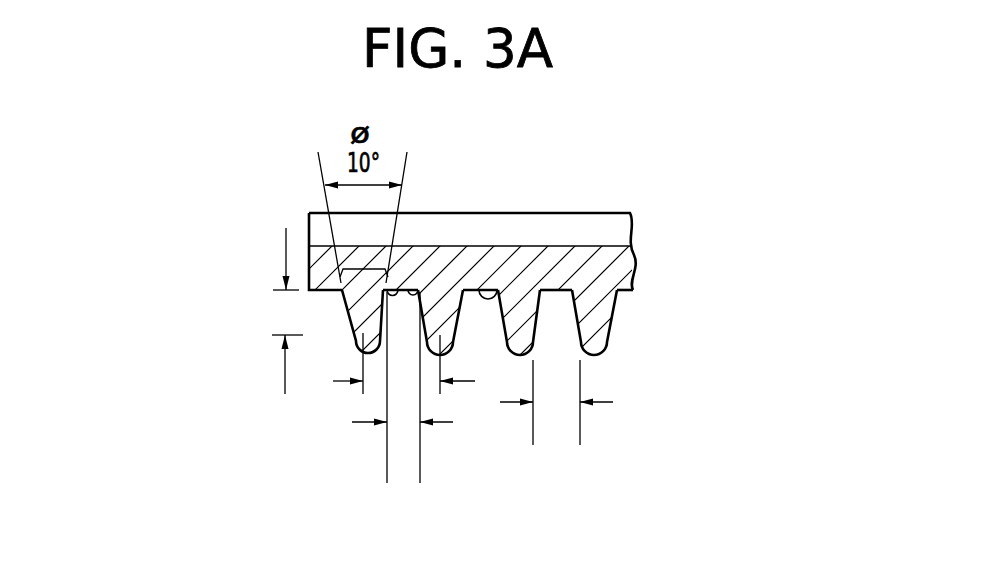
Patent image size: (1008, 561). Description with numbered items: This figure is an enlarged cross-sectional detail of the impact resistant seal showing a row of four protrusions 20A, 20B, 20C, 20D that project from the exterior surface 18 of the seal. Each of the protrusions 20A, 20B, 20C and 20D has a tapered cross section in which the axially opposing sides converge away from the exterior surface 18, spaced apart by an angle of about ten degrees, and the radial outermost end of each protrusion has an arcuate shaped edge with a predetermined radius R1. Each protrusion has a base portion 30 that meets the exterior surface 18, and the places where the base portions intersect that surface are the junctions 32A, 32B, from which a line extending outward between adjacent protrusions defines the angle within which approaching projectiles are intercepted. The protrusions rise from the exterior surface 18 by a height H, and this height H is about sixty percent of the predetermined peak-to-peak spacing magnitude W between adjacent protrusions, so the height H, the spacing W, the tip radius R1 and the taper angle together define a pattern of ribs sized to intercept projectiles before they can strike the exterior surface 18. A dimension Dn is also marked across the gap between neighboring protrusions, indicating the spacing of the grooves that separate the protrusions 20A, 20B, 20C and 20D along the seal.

The exterior surface 18 is at (480, 299).
The protrusion 20A is at (351, 339).
The protrusion 20B is at (446, 335).
The protrusion 20C is at (514, 342).
The protrusion 20D is at (590, 332).
The base portion 30 is at (362, 268).
The junction 32A is at (398, 294).
The junction 32B is at (413, 303).
The height H is at (285, 240).
The predetermined radius R1 is at (356, 350).
The peak-to-peak spacing magnitude W is at (336, 384).
The groove width dimension Dn is at (623, 477).